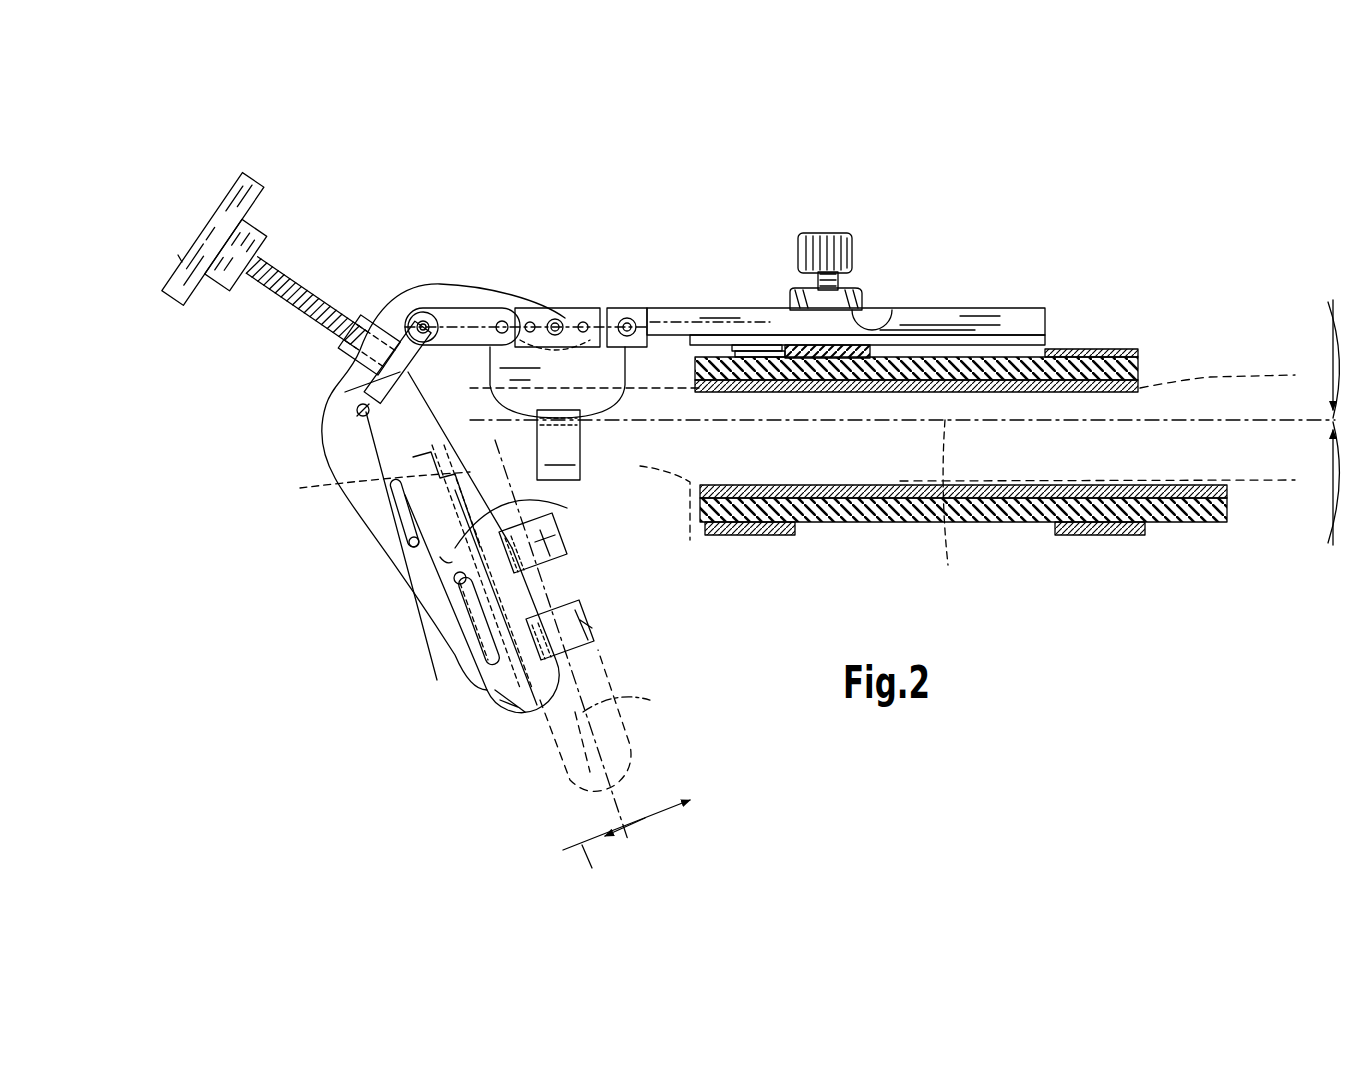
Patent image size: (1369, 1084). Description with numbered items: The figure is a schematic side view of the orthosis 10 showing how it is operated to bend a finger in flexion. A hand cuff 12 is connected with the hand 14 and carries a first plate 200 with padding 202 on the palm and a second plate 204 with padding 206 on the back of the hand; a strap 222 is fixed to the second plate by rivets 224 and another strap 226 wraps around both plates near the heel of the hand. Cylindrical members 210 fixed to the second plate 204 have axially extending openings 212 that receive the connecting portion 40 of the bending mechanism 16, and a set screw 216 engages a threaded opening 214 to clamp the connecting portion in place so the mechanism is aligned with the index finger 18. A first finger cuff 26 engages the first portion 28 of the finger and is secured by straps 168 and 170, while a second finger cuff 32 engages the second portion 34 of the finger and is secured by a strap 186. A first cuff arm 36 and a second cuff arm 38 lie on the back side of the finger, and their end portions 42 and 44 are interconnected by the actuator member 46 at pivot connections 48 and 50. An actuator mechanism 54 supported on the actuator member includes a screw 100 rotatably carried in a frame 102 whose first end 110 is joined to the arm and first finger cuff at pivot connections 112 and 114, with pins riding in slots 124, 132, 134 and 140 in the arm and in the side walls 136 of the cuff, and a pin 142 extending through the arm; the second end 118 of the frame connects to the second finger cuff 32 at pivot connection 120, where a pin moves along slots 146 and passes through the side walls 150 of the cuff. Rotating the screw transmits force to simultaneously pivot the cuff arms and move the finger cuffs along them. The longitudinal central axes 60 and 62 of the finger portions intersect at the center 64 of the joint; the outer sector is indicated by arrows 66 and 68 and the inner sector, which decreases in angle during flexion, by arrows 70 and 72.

The orthosis 10 is at (1040, 195).
The hand cuff 12 is at (1018, 522).
The hand 14 is at (1050, 305).
The bending mechanism 16 is at (185, 387).
The index finger 18 is at (612, 757).
The first finger cuff 26 is at (548, 679).
The first portion of the index finger 28 is at (595, 577).
The second finger cuff 32 is at (610, 370).
The second portion of the finger 34 is at (673, 514).
The first cuff arm 36 is at (392, 445).
The second cuff arm 38 is at (473, 308).
The connecting portion 40 is at (920, 333).
The end portion of the first cuff arm 42 is at (392, 432).
The end portion of the second cuff arm 44 is at (450, 310).
The actuator member 46 is at (398, 340).
The pivot connection 48 is at (355, 397).
The pivot connection 50 is at (423, 320).
The actuator mechanism 54 is at (199, 229).
The longitudinal central axis of the first finger portion 60 is at (650, 700).
The longitudinal central axis of the second finger portion 62 is at (952, 509).
The center of the joint 64 is at (452, 440).
The arrow indicating outer sector arc 66 is at (592, 868).
The arrow indicating outer sector arc 68 is at (1326, 353).
The arrow indicating inner sector arc 70 is at (665, 818).
The arrow indicating inner sector arc 72 is at (1336, 495).
The screw 100 is at (288, 280).
The frame 102 is at (350, 372).
The first end of the frame 110 is at (383, 518).
The pivot connection 112 is at (410, 550).
The pivot connection 114 is at (458, 580).
The second end of the frame 118 is at (527, 305).
The pivot connection 120 is at (562, 320).
The slots 124 is at (395, 490).
The slots 132 is at (300, 486).
The slots 134 is at (578, 505).
The side walls 136 is at (498, 706).
The slots 140 is at (488, 640).
The pin 142 is at (470, 628).
The slots 146 is at (505, 320).
The side walls 150 is at (620, 308).
The strap 168 is at (592, 623).
The strap 170 is at (565, 548).
The strap 186 is at (580, 470).
The first plate 200 is at (1210, 530).
The padding 202 is at (1230, 490).
The second plate 204 is at (1005, 352).
The padding 206 is at (1145, 388).
The cylindrical members 210 is at (858, 305).
The axially extending openings 212 is at (893, 330).
The threaded openings 214 is at (800, 298).
The set screw 216 is at (835, 262).
The strap 222 is at (765, 535).
The rivets 224 is at (745, 345).
The strap 226 is at (1113, 350).